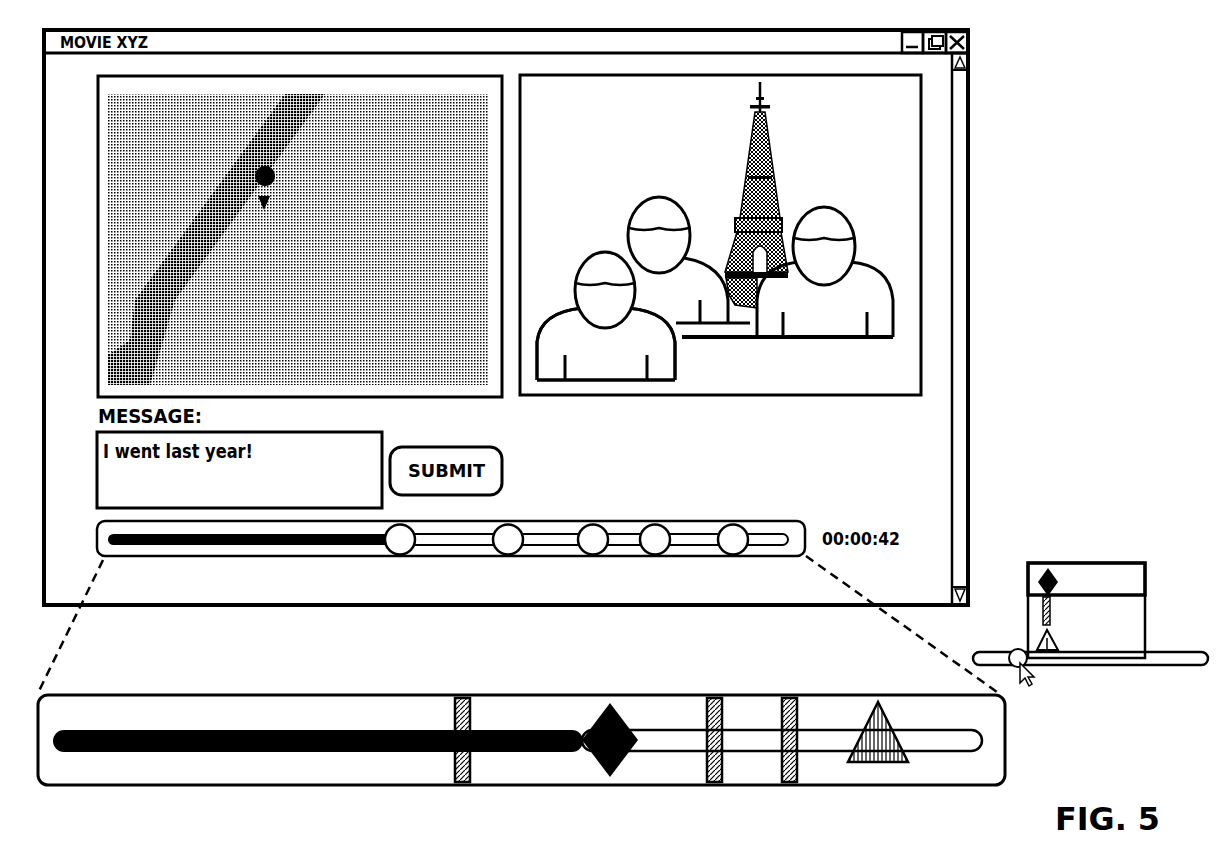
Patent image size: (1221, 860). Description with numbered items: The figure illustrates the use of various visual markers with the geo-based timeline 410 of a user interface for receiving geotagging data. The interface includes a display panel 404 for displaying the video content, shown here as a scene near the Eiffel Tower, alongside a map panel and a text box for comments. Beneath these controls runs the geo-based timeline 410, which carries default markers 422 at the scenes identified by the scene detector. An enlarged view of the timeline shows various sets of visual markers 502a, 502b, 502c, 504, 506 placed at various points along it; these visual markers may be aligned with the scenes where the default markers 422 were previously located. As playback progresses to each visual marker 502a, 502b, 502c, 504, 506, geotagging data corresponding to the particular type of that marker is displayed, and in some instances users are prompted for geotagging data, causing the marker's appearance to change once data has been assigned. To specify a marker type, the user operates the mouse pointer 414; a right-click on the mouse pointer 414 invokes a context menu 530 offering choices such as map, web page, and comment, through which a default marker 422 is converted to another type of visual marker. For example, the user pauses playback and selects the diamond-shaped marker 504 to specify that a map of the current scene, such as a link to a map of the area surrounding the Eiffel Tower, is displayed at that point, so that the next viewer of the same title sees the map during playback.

The display panel 404 is at (692, 397).
The geo-based timeline 410 is at (510, 554).
The default marker 422 is at (738, 524).
The visual marker 502a is at (462, 697).
The visual marker 502b is at (713, 697).
The visual marker 502c is at (788, 697).
The diamond-shaped marker 504 is at (597, 723).
The visual marker 506 is at (890, 725).
The context menu 530 is at (1145, 583).
The mouse pointer 414 is at (1026, 682).